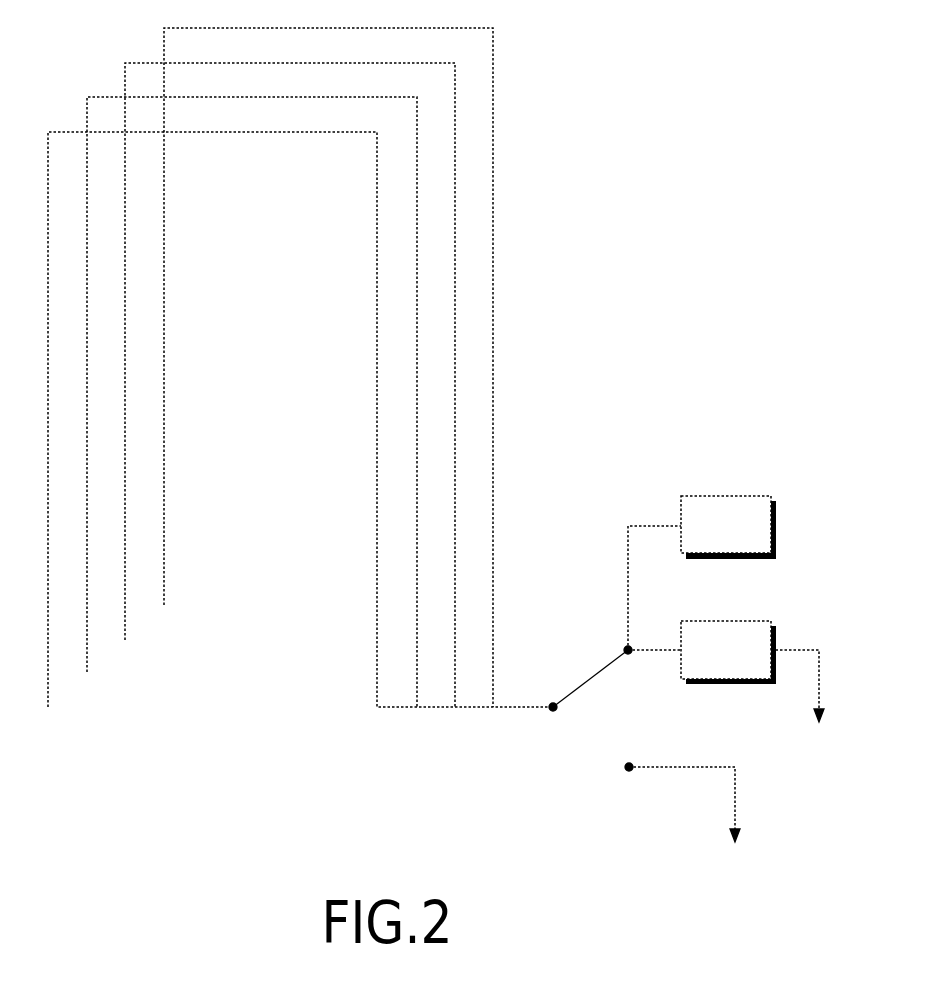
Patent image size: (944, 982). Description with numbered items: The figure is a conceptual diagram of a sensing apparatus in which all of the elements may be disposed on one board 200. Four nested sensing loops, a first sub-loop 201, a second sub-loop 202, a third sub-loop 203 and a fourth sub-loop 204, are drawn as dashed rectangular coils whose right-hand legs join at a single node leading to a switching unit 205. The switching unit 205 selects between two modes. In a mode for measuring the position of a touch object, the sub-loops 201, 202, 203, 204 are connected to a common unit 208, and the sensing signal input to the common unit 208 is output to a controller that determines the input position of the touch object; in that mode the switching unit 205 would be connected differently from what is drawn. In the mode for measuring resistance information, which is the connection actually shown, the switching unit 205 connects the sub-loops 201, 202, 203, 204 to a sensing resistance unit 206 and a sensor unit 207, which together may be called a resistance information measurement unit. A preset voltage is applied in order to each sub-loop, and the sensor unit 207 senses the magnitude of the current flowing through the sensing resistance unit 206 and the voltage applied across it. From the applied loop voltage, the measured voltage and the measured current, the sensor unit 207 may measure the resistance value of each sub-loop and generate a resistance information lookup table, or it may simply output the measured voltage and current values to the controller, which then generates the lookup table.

The board 200 is at (672, 72).
The first sub-loop 201 is at (49, 689).
The second sub-loop 202 is at (89, 657).
The third sub-loop 203 is at (127, 622).
The fourth sub-loop 204 is at (165, 587).
The switching unit 205 is at (591, 679).
The sensing resistance unit 206 is at (727, 618).
The sensor unit 207 is at (727, 493).
The common unit 208 is at (737, 800).